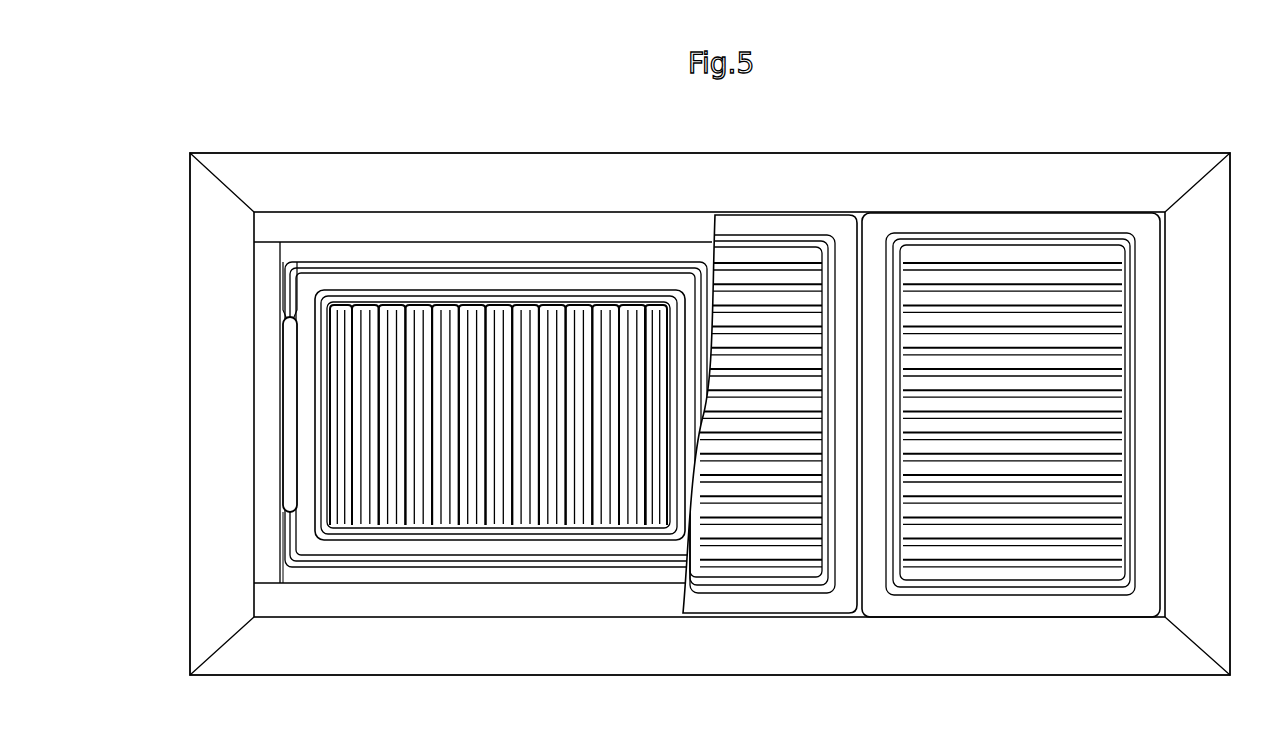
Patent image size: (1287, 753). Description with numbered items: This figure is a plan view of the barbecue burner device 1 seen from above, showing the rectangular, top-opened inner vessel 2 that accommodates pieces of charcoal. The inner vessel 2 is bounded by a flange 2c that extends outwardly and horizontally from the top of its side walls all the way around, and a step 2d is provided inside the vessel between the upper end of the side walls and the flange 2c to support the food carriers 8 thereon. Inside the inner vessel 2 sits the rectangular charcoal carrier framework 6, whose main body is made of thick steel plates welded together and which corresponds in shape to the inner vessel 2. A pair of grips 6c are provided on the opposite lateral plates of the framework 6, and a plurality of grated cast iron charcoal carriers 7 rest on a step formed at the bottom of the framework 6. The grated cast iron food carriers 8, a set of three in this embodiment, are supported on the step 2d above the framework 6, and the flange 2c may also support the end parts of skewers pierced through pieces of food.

The heater body / outer frame 1 is at (576, 153).
The inner vessel 2 is at (490, 153).
The flange 2c is at (425, 163).
The step 2d is at (447, 225).
The charcoal carrier framework 6 is at (283, 293).
The grips 6c is at (283, 350).
The charcoal carriers 7 is at (338, 268).
The food carriers 8 is at (806, 215).